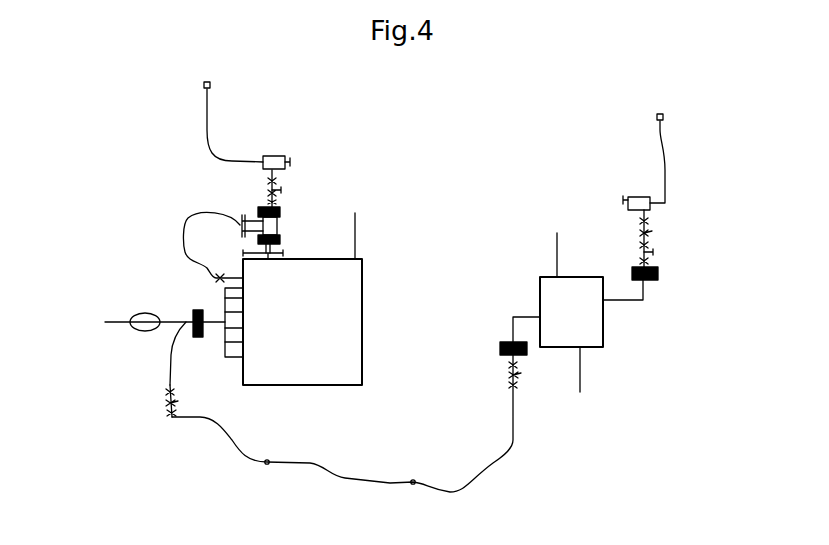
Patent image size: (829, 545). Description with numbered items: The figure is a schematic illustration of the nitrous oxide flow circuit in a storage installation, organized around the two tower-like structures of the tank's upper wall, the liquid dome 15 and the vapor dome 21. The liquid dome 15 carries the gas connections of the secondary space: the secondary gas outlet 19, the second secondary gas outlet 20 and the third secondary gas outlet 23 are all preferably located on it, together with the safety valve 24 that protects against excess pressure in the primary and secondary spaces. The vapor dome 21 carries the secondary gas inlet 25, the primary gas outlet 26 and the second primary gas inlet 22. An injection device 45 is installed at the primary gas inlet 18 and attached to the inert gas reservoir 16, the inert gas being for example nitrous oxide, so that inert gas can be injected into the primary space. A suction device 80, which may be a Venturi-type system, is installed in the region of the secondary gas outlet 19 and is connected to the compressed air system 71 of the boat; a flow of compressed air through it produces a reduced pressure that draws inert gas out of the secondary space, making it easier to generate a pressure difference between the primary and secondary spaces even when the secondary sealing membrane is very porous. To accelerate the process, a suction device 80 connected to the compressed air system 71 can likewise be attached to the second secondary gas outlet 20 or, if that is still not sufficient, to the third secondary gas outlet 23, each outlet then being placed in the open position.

The liquid dome 15 is at (316, 326).
The inert gas reservoir 16 is at (100, 333).
The primary gas inlet 18 is at (207, 340).
The secondary gas outlet 19 is at (210, 284).
The second secondary gas outlet 20 is at (283, 235).
The vapor dome 21 is at (582, 322).
The second primary gas inlet 22 is at (499, 349).
The third secondary gas outlet 23 is at (661, 273).
The safety valve 24 is at (357, 232).
The secondary gas inlet 25 is at (553, 253).
The primary gas outlet 26 is at (583, 370).
The injection device 45 is at (142, 332).
The compressed air system 71 is at (203, 85).
The suction device 80 is at (274, 156).